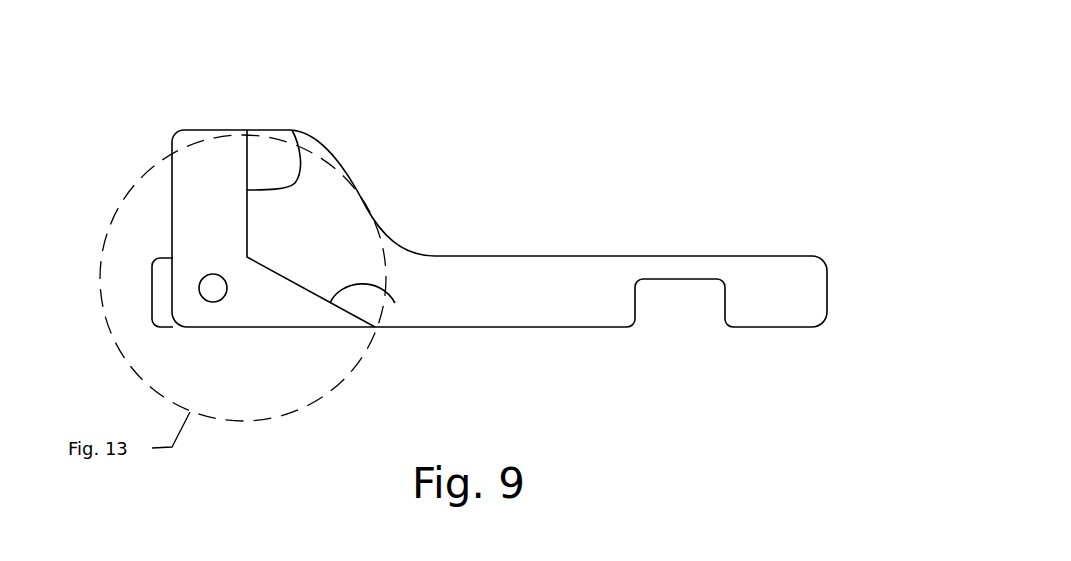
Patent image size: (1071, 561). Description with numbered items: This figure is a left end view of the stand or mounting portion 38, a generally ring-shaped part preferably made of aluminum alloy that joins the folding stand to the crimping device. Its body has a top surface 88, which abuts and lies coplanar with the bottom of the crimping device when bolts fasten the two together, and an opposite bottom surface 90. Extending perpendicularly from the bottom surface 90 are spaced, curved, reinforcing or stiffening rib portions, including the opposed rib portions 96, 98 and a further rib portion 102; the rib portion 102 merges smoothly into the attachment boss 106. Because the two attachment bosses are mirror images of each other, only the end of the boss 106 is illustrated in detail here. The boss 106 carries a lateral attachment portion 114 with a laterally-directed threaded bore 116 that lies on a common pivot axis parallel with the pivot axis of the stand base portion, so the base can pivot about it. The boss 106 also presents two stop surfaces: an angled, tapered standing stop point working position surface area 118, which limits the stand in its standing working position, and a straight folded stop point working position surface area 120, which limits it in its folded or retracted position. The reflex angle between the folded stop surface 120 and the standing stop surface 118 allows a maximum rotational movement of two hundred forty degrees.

The stand or mounting portion 38 is at (713, 122).
The top surface 88 is at (765, 327).
The bottom surface 90 is at (563, 254).
The rib portion 96 is at (150, 292).
The rib portion 98 is at (797, 297).
The rib portion 102 is at (510, 305).
The attachment boss 106 is at (167, 205).
The lateral attachment portion 114 is at (203, 167).
The laterally-directed threaded bore 116 is at (213, 302).
The standing stop point working position surface area 118 is at (395, 303).
The folded stop point working position surface area 120 is at (292, 130).